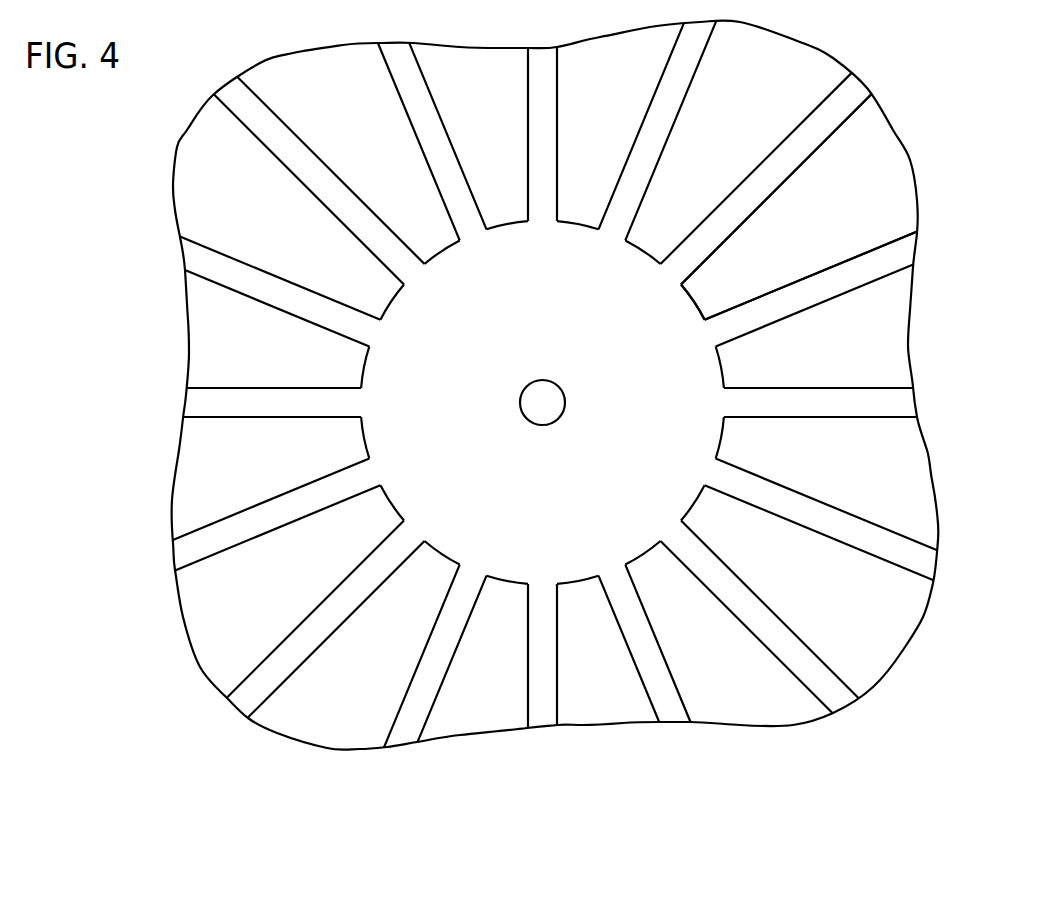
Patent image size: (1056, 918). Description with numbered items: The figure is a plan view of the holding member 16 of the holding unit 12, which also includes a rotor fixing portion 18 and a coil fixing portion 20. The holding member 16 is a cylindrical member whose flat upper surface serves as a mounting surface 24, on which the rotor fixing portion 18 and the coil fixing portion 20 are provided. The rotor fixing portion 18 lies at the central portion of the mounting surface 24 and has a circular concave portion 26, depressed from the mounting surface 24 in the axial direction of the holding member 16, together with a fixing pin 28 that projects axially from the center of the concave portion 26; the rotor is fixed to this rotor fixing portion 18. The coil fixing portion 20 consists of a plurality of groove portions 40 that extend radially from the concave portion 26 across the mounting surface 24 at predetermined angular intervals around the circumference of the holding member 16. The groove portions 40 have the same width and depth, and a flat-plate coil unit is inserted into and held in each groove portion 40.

The holding unit 12 is at (609, 384).
The holding member 16 is at (835, 60).
The rotor fixing portion 18 is at (662, 325).
The coil fixing portion 20 is at (887, 175).
The mounting surface 24 is at (920, 518).
The concave portion 26 is at (523, 481).
The fixing pin 28 is at (552, 417).
The groove portions 40 is at (887, 407).